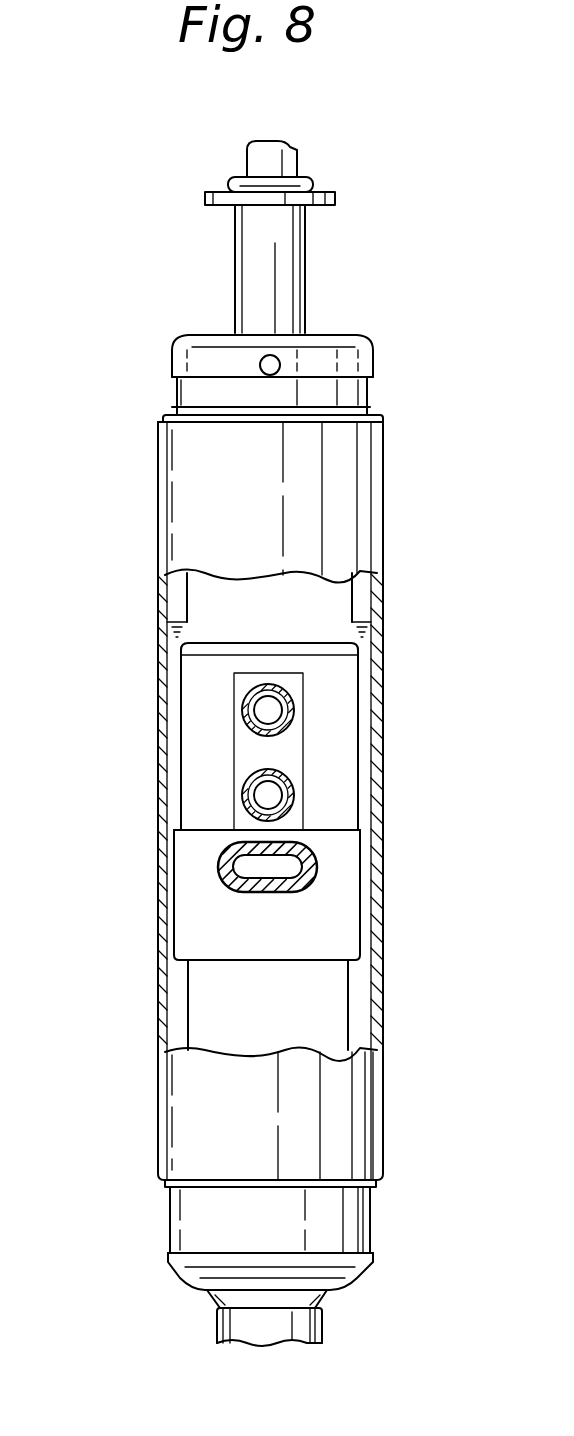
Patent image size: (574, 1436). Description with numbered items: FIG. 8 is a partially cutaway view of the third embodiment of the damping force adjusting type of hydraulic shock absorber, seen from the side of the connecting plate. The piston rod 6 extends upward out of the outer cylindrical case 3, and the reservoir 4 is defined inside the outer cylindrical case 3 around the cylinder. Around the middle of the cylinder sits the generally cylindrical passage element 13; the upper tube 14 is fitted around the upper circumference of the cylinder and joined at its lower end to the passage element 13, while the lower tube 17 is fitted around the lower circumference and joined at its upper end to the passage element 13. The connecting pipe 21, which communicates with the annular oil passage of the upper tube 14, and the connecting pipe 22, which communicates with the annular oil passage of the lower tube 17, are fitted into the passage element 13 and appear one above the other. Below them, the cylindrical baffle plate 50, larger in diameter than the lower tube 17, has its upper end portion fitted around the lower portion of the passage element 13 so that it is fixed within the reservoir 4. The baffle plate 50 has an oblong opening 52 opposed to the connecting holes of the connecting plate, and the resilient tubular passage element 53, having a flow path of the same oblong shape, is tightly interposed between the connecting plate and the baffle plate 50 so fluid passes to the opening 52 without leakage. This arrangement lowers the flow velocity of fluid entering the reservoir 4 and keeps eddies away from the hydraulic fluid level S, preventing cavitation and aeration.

The outer cylindrical case 3 is at (165, 462).
The reservoir 4 is at (178, 774).
The piston rod 6 is at (250, 267).
The passage element 13 is at (195, 690).
The upper tube 14 is at (207, 580).
The lower tube 17 is at (205, 1013).
The connecting pipe 21 is at (293, 712).
The connecting pipe 22 is at (293, 799).
The baffle plate 50 is at (190, 936).
The opening 52 is at (218, 872).
The tubular passage element 53 is at (317, 875).
The hydraulic fluid level S is at (178, 615).